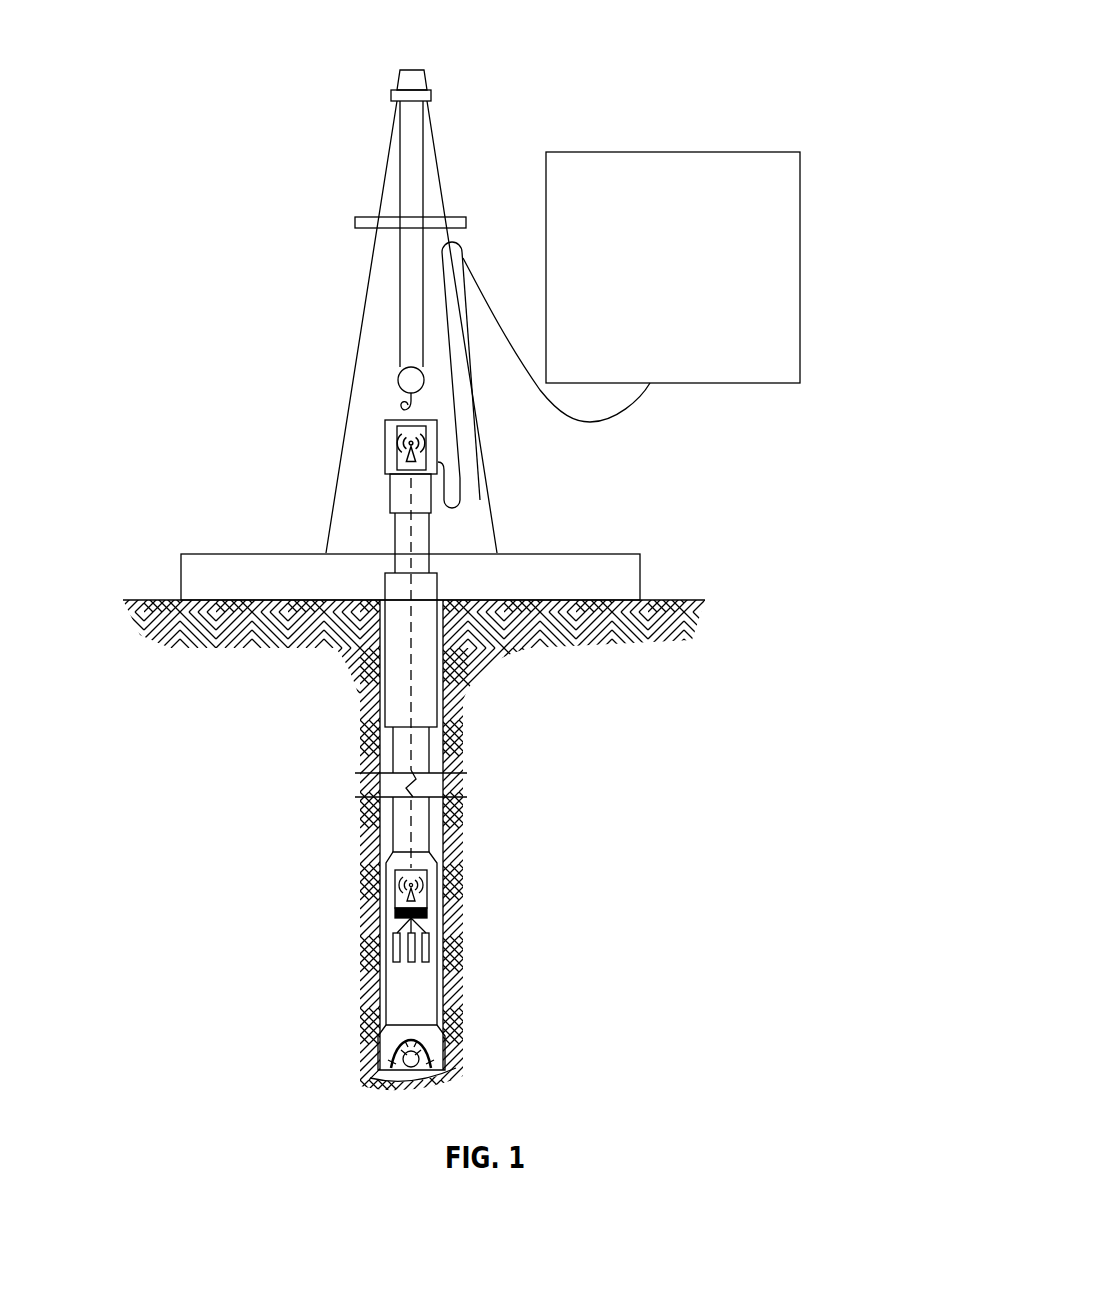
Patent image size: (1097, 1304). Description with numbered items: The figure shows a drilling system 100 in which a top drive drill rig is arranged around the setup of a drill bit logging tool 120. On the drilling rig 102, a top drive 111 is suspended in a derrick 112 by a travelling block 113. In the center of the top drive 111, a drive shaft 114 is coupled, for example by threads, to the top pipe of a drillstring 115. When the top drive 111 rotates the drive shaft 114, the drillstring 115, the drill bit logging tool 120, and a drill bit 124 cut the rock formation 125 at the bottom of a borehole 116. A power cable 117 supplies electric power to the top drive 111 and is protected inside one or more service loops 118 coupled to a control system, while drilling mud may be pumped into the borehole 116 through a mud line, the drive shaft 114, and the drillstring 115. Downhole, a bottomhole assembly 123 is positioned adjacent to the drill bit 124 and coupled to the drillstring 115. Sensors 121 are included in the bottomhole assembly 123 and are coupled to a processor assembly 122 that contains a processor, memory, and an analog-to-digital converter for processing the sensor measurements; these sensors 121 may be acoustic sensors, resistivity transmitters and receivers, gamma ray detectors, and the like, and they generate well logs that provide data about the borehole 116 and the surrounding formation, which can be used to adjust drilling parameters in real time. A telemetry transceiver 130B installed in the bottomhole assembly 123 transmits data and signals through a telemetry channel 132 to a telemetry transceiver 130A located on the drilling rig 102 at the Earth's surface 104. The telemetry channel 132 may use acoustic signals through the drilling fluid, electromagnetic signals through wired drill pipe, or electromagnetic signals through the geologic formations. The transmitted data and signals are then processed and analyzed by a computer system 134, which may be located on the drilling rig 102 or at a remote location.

The drilling system 100 is at (718, 74).
The drilling rig 102 is at (163, 70).
The Earth's surface 104 is at (642, 577).
The top drive 111 is at (384, 437).
The derrick 112 is at (336, 487).
The travelling block 113 is at (398, 378).
The drive shaft 114 is at (390, 492).
The drillstring 115 is at (393, 763).
The borehole 116 is at (377, 735).
The power cable 117 is at (458, 432).
The service loop 118 is at (617, 417).
The drill bit logging tool 120 is at (250, 845).
The sensors 121 is at (393, 948).
The processor assembly 122 is at (427, 912).
The bottomhole assembly 123 is at (386, 885).
The drill bit 124 is at (379, 1057).
The rock formation 125 is at (440, 1080).
The telemetry transceiver 130A is at (438, 462).
The telemetry transceiver 130B is at (427, 877).
The telemetry channel 132 is at (411, 680).
The computer system 134 is at (740, 151).